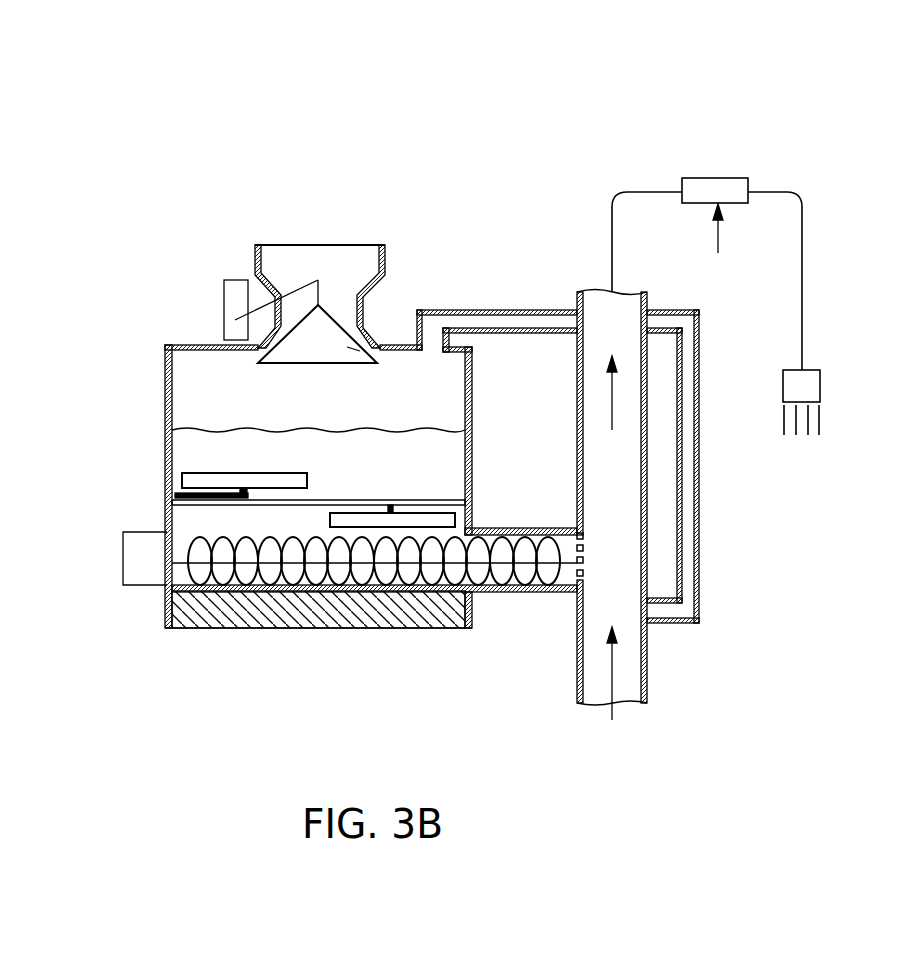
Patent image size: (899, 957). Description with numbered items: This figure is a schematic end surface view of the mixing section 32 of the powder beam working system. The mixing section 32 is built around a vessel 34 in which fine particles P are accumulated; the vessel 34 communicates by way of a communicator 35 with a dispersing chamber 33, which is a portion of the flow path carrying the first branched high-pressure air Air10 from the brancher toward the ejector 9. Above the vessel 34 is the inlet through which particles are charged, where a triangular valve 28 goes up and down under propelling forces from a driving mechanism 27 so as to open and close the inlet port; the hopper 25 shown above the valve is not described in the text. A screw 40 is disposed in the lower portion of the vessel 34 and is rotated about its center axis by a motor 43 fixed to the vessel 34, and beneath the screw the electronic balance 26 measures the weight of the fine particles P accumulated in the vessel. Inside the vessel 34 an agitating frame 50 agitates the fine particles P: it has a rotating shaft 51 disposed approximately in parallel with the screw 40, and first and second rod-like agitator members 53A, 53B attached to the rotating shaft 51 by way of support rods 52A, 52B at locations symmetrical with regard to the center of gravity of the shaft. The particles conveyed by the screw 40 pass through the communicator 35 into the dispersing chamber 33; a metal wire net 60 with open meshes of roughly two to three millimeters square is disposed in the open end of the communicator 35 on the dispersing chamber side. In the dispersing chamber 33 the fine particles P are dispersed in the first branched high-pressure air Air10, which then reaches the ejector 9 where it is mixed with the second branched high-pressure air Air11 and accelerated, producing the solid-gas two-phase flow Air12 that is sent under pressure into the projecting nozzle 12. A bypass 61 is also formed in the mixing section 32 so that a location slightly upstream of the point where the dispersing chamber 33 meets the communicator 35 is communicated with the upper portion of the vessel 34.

The ejector 9 is at (708, 178).
The projecting nozzle 12 is at (820, 380).
The hopper 25 is at (383, 250).
The electronic balance 26 is at (412, 630).
The driving mechanism 27 is at (224, 300).
The triangular valve 28 is at (375, 343).
The mixing section 32 is at (737, 663).
The dispersing chamber 33 is at (633, 675).
The vessel 34 is at (167, 367).
The communicator 35 is at (523, 592).
The screw 40 is at (210, 577).
The motor 43 is at (135, 575).
The agitating frame 50 is at (430, 458).
The rotating shaft 51 is at (470, 494).
The support rod 52A is at (177, 495).
The support rod 52B is at (462, 498).
The first agitator member 53A is at (182, 480).
The second agitator member 53B is at (455, 515).
The metal wire net 60 is at (583, 547).
The bypass 61 is at (703, 502).
The fine particles P is at (188, 450).
The first branched high-pressure air Air10 is at (611, 720).
The second branched high-pressure air Air11 is at (718, 238).
The solid-gas two-phase flow Air12 is at (803, 247).